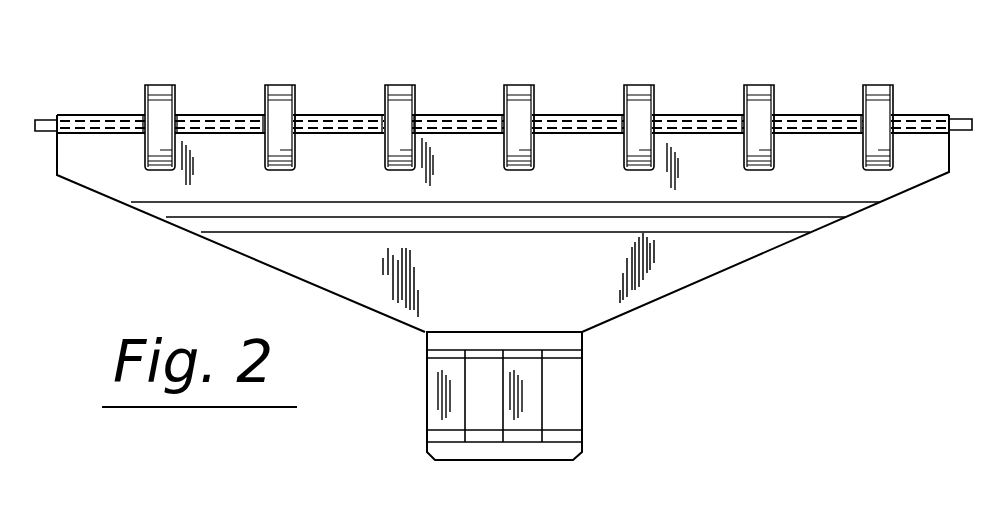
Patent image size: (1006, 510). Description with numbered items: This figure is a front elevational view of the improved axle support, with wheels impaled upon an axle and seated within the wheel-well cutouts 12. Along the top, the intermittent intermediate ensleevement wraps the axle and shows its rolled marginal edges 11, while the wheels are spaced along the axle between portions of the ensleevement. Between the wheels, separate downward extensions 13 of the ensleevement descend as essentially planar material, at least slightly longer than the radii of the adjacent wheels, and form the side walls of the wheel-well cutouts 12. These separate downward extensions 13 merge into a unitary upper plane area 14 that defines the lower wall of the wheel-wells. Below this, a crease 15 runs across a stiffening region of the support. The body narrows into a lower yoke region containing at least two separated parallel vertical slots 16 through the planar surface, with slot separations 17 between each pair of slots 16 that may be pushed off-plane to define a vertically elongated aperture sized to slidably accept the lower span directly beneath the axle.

The rolled marginal edges 11 is at (693, 113).
The wheel-well cutouts 12 is at (893, 163).
The downward extensions 13 is at (817, 155).
The upper plane area 14 is at (758, 182).
The crease 15 is at (667, 217).
The vertical slots 16 is at (543, 393).
The slot separations 17 is at (562, 417).